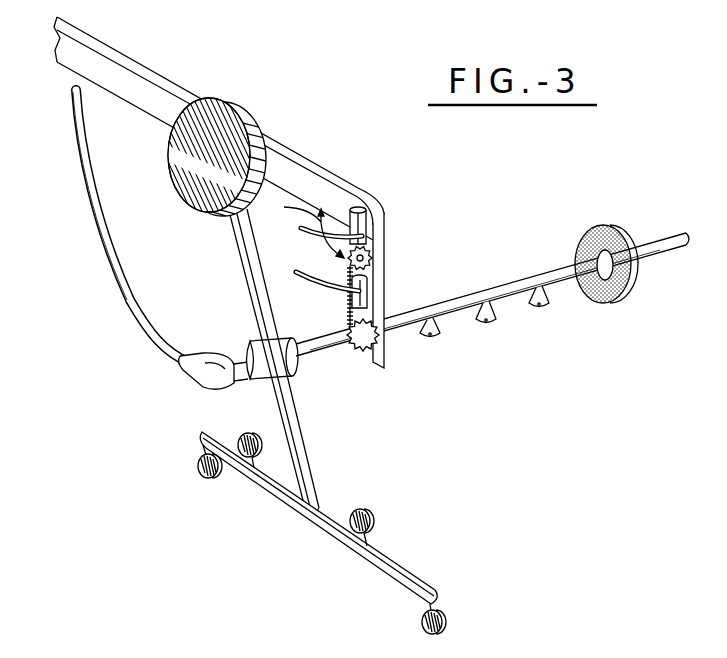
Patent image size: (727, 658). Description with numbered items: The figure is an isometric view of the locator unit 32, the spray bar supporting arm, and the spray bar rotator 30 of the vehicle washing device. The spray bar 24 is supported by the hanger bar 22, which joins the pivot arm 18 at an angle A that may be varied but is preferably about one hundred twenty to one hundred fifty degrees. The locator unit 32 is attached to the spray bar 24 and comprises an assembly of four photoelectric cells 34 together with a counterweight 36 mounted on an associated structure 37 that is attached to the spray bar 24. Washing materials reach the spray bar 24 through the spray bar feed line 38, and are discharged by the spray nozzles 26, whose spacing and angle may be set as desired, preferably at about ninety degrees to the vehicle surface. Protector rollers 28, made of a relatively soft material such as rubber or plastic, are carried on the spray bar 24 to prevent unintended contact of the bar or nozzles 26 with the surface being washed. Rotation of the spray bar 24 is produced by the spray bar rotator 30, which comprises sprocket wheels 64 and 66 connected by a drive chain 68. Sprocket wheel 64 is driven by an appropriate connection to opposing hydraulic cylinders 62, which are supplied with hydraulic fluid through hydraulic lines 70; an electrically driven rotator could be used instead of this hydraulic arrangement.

The pivot arm 18 is at (163, 77).
The hanger bar 22 is at (384, 368).
The spray bar 24 is at (543, 275).
The spray nozzles 26 is at (433, 340).
The protector rollers 28 is at (627, 296).
The spray bar rotator 30 is at (399, 292).
The locator unit 32 is at (452, 597).
The photoelectric cells 34 is at (249, 433).
The counterweight 36 is at (243, 113).
The associated structure 37 is at (243, 243).
The spray bar feed line 38 is at (97, 150).
The opposing hydraulic cylinders 62 is at (359, 211).
The sprocket wheel 64 is at (368, 257).
The sprocket wheel 66 is at (362, 352).
The drive chain 68 is at (347, 313).
The hydraulic lines 70 is at (296, 271).